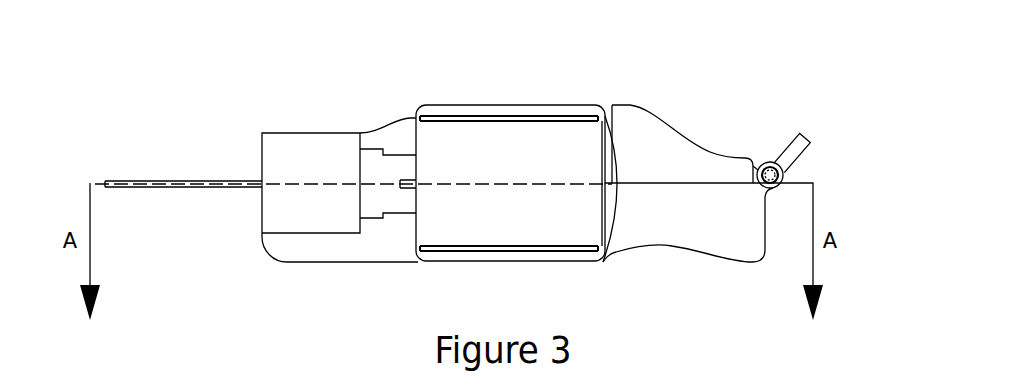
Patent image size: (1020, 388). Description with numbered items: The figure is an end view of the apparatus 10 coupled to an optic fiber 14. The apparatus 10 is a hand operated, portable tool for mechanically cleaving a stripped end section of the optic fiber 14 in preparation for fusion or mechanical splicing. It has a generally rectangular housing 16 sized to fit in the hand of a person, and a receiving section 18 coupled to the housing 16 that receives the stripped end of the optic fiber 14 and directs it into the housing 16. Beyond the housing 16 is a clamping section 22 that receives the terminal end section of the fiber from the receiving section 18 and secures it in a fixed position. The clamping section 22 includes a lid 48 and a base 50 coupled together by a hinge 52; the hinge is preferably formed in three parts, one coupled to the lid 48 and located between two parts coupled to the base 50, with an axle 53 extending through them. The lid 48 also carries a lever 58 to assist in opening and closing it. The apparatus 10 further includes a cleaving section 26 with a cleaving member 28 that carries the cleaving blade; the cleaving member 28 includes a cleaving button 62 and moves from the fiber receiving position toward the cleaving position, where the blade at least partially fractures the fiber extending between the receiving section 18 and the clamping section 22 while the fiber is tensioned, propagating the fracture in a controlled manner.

The apparatus 10 is at (542, 105).
The optic fiber 14 is at (213, 182).
The housing 16 is at (487, 104).
The receiving section 18 is at (303, 132).
The clamping section 22 is at (681, 134).
The cleaving section 26 is at (457, 222).
The cleaving member 28 is at (563, 223).
The lid 48 is at (633, 127).
The base 50 is at (678, 227).
The hinge 52 is at (765, 162).
The axle 53 is at (773, 188).
The lever 58 is at (803, 132).
The cleaving button 62 is at (430, 218).